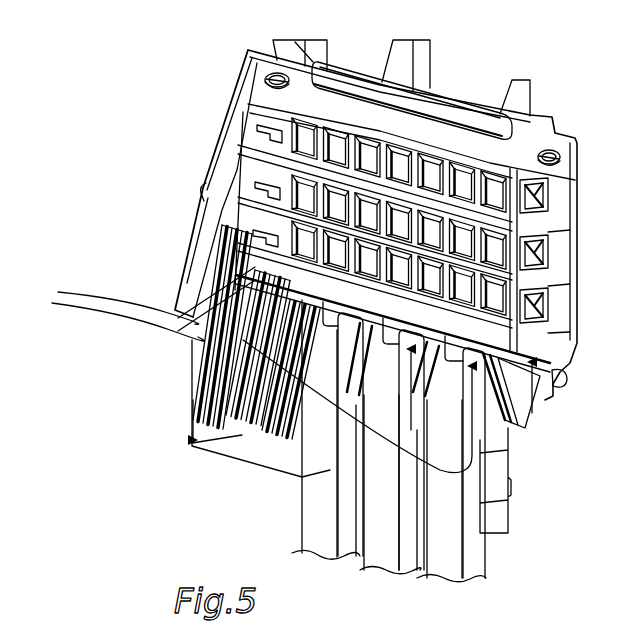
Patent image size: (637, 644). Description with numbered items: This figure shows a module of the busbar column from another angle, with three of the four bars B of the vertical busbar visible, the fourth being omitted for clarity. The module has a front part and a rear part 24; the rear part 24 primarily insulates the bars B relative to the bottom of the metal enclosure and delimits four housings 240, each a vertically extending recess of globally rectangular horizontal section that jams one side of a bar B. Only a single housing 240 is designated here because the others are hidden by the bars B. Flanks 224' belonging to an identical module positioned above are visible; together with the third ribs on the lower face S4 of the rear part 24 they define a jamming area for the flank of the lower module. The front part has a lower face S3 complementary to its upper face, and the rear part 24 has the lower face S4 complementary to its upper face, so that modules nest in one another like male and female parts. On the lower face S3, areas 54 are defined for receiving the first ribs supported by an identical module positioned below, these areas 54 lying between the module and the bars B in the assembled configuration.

The area for receiving first ribs 54 is at (118, 310).
The rear part 24 is at (207, 427).
The housing 240 is at (190, 433).
The flank 224' is at (245, 380).
The lower face of rear part S4 is at (286, 458).
The lower face of front part S3 is at (532, 426).
The bar B is at (323, 522).